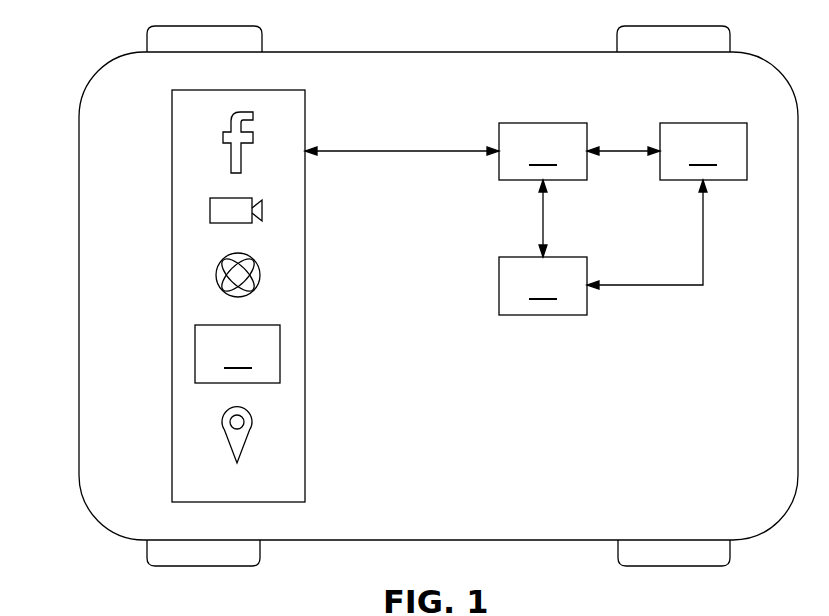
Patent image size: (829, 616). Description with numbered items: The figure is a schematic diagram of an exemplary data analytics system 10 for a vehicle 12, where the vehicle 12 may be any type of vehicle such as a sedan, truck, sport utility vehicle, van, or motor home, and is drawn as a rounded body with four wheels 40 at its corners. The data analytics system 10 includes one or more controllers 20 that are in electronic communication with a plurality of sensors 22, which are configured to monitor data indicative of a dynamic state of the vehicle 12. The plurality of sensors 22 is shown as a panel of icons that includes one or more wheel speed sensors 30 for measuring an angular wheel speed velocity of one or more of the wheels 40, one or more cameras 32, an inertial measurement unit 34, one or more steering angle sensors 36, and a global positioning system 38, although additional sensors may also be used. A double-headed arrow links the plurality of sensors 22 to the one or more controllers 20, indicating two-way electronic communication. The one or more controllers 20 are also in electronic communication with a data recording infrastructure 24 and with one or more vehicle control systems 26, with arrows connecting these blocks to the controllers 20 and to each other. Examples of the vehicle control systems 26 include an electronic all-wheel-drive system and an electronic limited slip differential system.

The data analytics system 10 is at (128, 82).
The vehicle 12 is at (403, 52).
The controllers 20 is at (543, 151).
The plurality of sensors 22 is at (224, 90).
The data recording infrastructure 24 is at (703, 151).
The vehicle control systems 26 is at (543, 286).
The wheel speed sensors 30 is at (228, 160).
The cameras 32 is at (210, 212).
The inertial measurement unit 34 is at (216, 275).
The steering angle sensors 36 is at (237, 354).
The global positioning system 38 is at (222, 428).
The wheels 40 is at (205, 26).